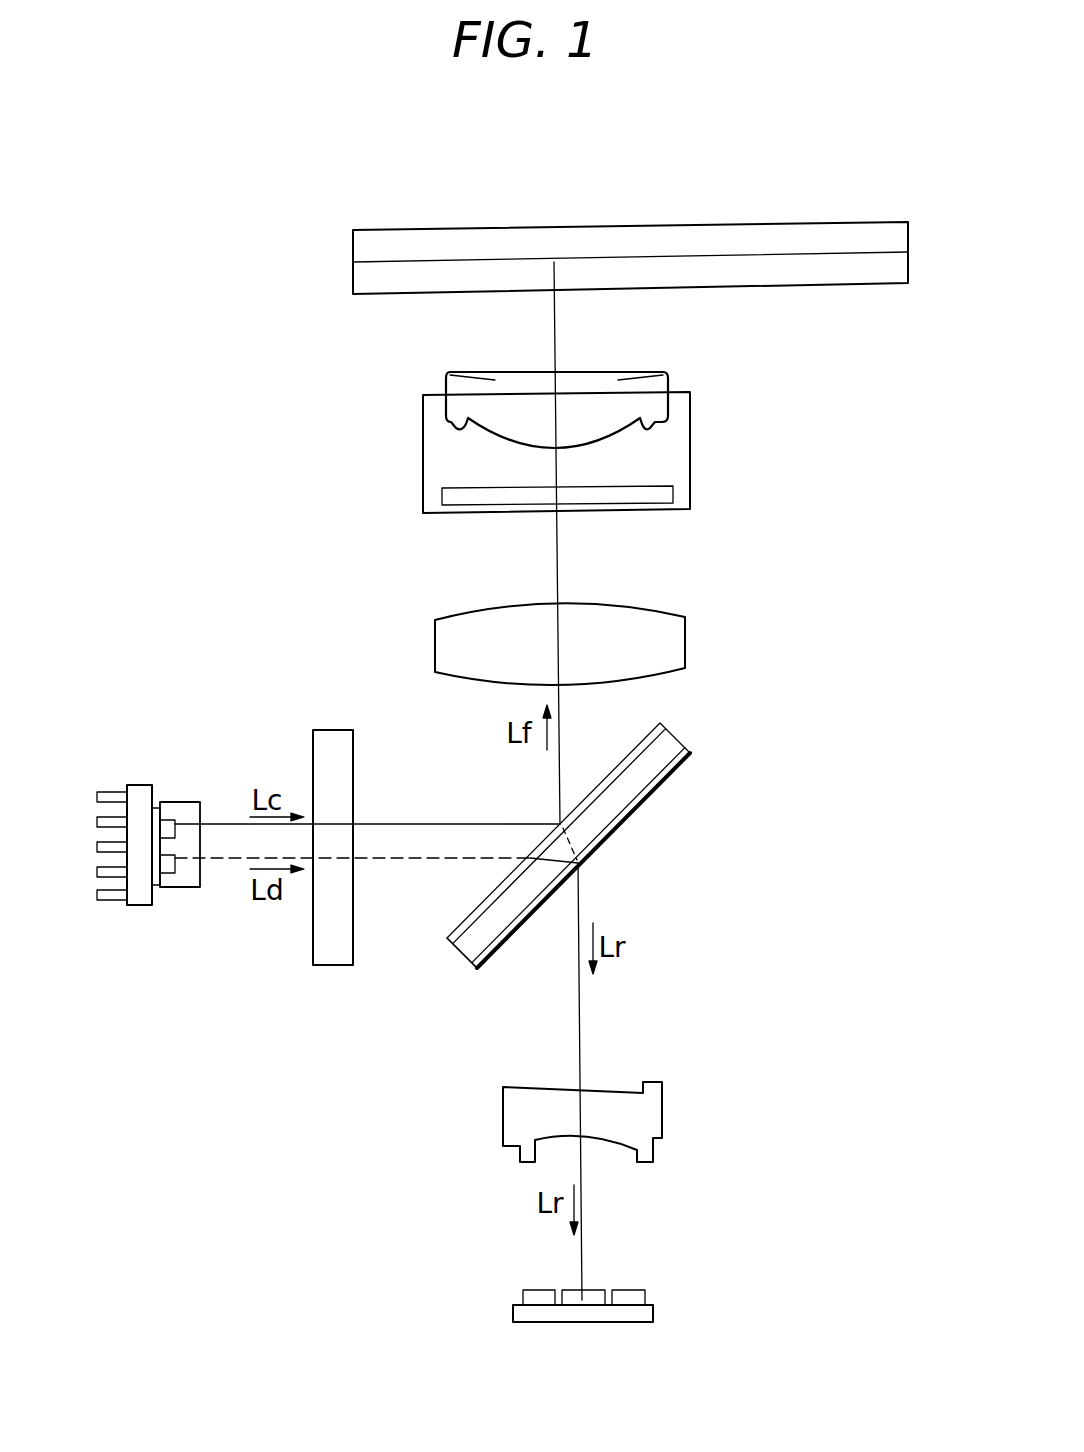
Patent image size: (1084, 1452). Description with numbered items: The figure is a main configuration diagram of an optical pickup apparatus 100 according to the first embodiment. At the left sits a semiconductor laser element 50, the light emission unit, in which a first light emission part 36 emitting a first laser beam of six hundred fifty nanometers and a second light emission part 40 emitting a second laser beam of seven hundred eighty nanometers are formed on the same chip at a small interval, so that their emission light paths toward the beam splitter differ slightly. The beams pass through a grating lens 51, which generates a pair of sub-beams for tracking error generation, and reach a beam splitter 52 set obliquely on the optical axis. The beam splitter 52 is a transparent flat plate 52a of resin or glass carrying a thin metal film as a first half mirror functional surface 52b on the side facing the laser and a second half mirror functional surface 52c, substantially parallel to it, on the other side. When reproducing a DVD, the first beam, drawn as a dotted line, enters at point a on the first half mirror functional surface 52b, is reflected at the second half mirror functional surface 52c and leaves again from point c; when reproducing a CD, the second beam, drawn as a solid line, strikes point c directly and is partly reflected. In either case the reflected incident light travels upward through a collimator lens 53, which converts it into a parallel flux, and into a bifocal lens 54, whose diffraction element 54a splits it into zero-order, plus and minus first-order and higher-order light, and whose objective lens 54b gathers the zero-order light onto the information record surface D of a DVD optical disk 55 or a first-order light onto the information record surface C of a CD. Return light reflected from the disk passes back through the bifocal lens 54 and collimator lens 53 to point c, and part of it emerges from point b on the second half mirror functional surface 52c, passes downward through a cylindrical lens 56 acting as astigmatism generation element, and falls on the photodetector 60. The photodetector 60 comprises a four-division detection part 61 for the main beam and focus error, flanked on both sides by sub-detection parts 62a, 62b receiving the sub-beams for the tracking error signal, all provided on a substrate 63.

The optical pickup apparatus 100 is at (730, 141).
The optical disk 55 is at (822, 222).
The information record surface C is at (350, 236).
The information record surface D is at (350, 270).
The bifocal lens 54 is at (558, 471).
The diffraction element 54a is at (678, 490).
The objective lens 54b is at (445, 382).
The collimator lens 53 is at (685, 618).
The beam splitter 52 is at (576, 848).
The transparent flat plate 52a is at (680, 735).
The first half mirror functional surface 52b is at (447, 940).
The second half mirror functional surface 52c is at (670, 777).
The point a is at (530, 858).
The point b is at (578, 864).
The point c is at (560, 822).
The grating lens 51 is at (320, 728).
The semiconductor laser element 50 is at (150, 797).
The second light emission part 40 is at (166, 820).
The first light emission part 36 is at (175, 873).
The cylindrical lens 56 is at (662, 1083).
The photodetector 60 is at (612, 1253).
The detection part 61 is at (565, 1290).
The sub-detection part 62a is at (645, 1290).
The sub-detection part 62b is at (525, 1291).
The substrate 63 is at (655, 1318).